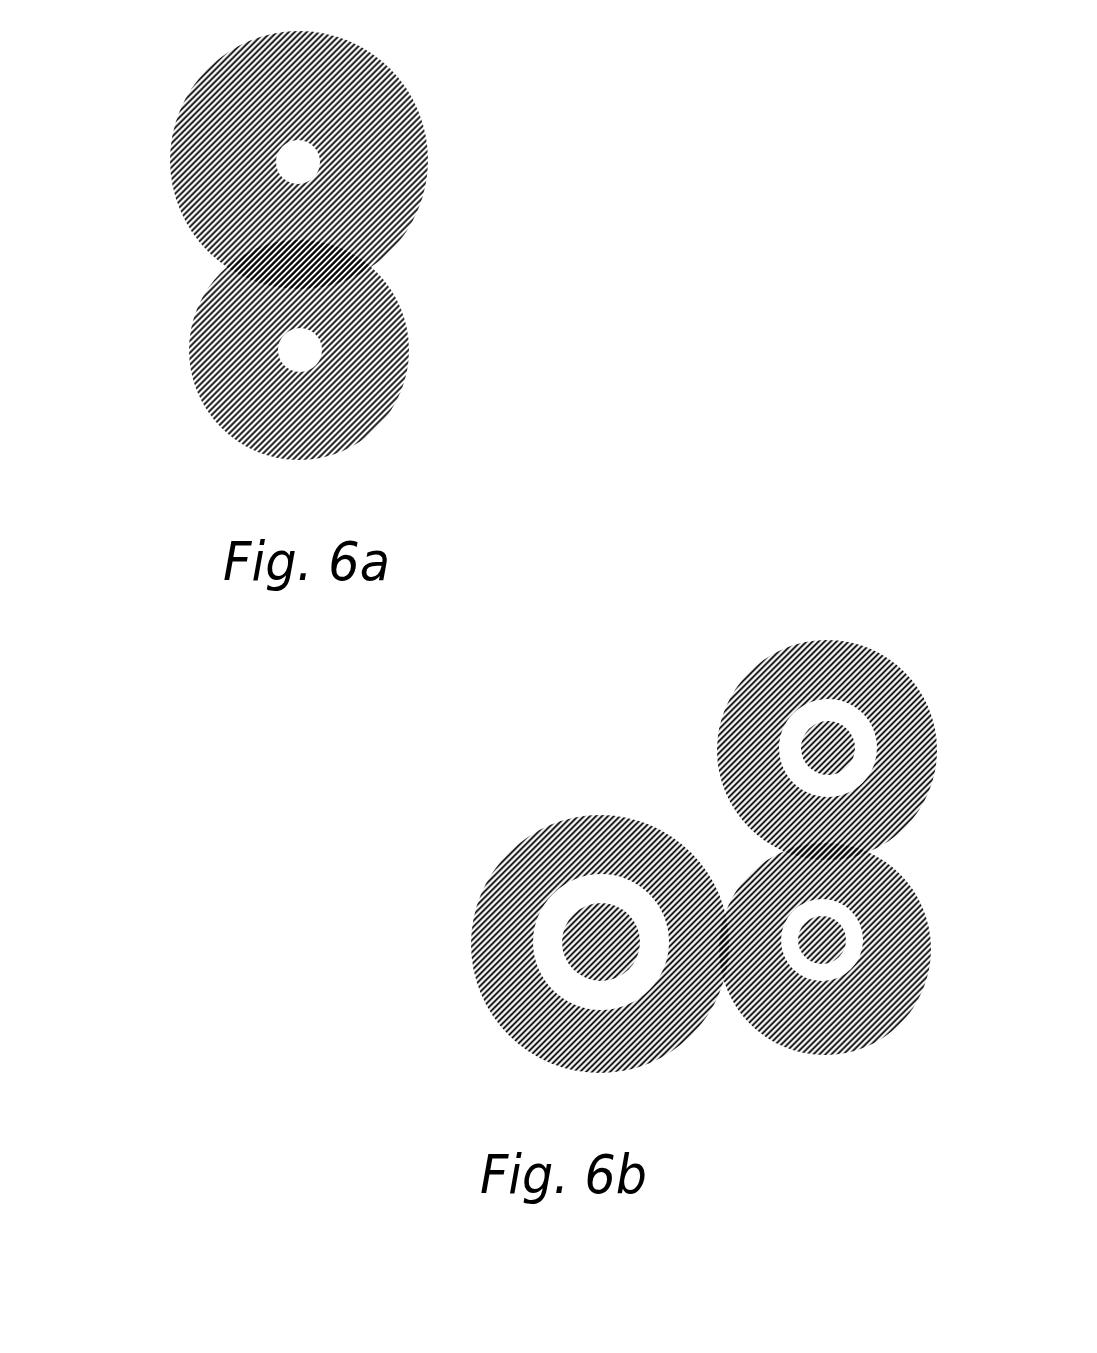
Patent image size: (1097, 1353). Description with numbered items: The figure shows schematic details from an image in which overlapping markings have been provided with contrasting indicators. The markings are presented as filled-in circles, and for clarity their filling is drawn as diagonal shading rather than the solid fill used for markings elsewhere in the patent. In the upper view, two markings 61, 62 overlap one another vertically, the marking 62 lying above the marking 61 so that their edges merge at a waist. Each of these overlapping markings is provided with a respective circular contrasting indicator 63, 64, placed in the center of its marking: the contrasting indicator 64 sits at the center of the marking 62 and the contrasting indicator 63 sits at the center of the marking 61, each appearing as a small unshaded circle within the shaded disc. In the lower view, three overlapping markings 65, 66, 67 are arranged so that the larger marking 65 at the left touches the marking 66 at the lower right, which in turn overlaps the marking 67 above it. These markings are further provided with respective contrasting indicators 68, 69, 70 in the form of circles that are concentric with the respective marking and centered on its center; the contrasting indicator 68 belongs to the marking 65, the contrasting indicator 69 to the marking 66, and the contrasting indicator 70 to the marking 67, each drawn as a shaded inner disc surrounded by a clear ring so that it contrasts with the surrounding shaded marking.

In FIG. 6a, the marking 61 is at (400, 392).
In FIG. 6a, the marking 62 is at (170, 176).
In FIG. 6a, the contrasting indicator 63 is at (282, 353).
In FIG. 6a, the contrasting indicator 64 is at (318, 165).
In FIG. 6b, the marking 65 is at (540, 853).
In FIG. 6b, the marking 66 is at (880, 1020).
In FIG. 6b, the marking 67 is at (755, 667).
In FIG. 6b, the contrasting indicator 68 is at (545, 923).
In FIG. 6b, the contrasting indicator 69 is at (823, 977).
In FIG. 6b, the contrasting indicator 70 is at (818, 708).